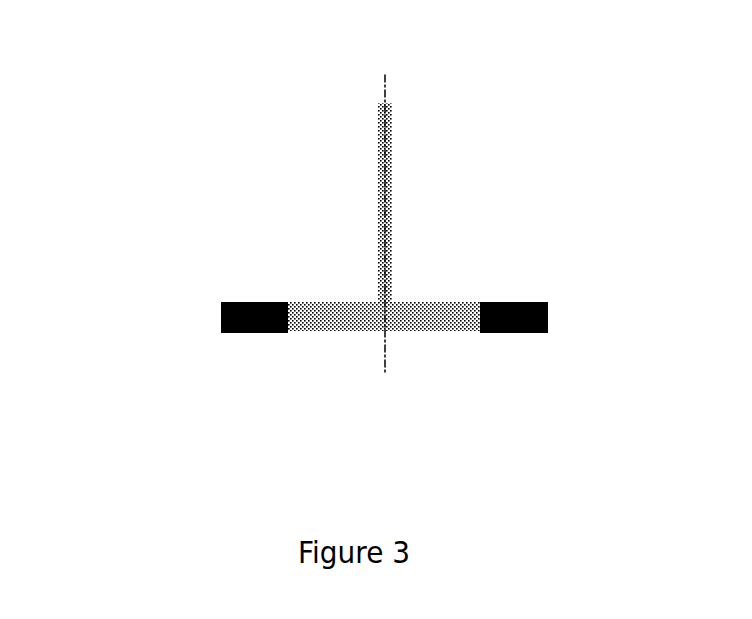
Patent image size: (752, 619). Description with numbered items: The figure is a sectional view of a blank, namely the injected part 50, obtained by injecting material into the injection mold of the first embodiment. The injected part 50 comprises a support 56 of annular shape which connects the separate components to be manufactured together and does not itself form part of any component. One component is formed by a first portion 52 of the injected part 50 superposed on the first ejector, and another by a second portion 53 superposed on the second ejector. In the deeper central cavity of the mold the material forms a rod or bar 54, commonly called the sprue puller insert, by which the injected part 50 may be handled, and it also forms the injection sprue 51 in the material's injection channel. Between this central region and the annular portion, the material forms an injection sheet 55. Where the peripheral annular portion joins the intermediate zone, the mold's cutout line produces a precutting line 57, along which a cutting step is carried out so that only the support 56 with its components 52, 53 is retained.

The injected part 50 is at (267, 251).
The injection sprue 51 is at (382, 158).
The first portion 52 is at (261, 333).
The second portion 53 is at (241, 334).
The rod or bar 54 is at (397, 334).
The injection sheet 55 is at (350, 304).
The support 56 is at (221, 305).
The precutting line 57 is at (483, 332).